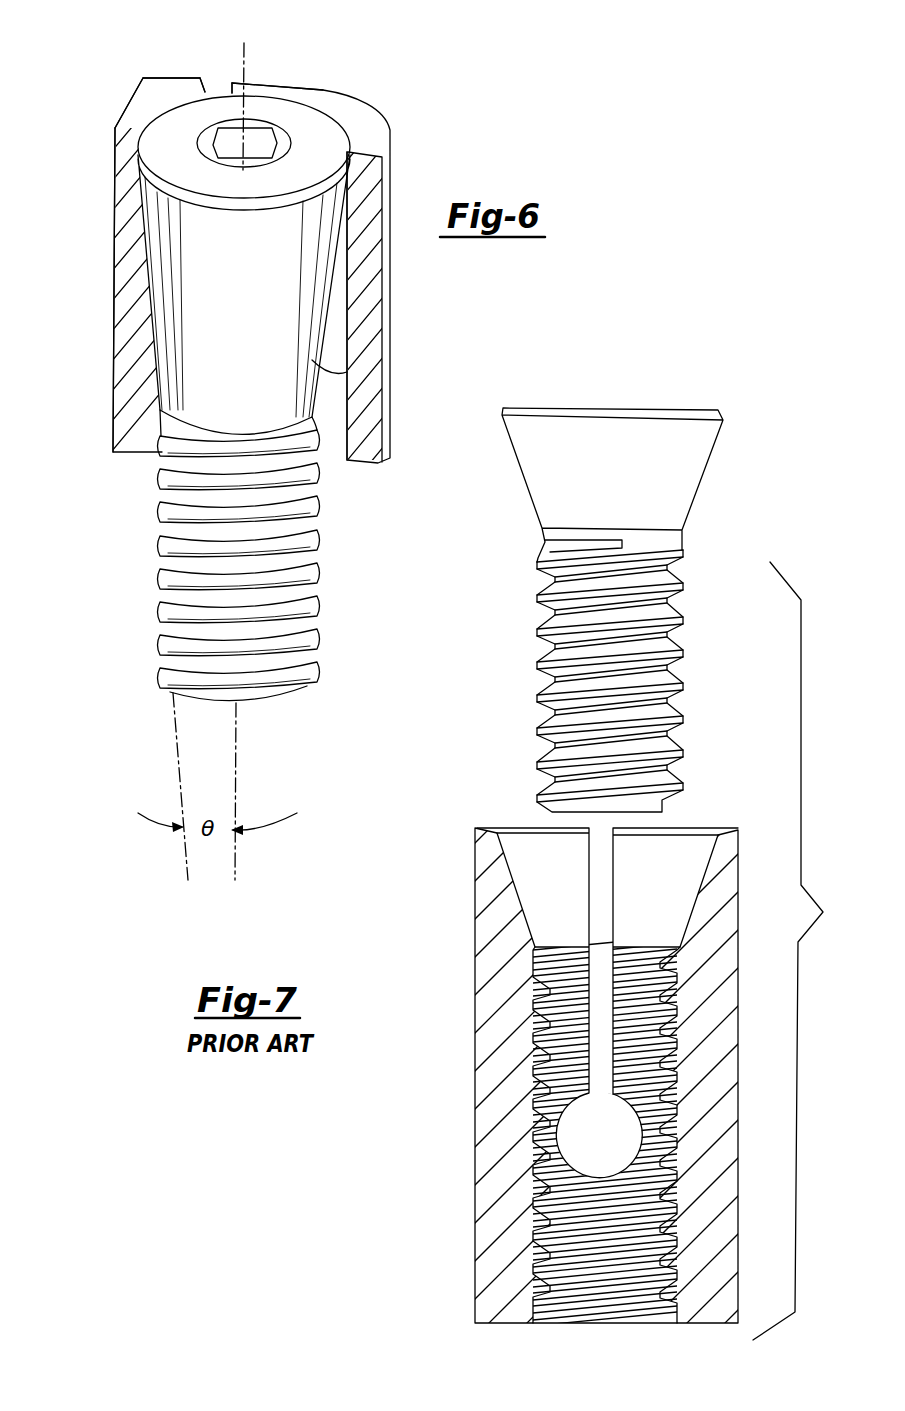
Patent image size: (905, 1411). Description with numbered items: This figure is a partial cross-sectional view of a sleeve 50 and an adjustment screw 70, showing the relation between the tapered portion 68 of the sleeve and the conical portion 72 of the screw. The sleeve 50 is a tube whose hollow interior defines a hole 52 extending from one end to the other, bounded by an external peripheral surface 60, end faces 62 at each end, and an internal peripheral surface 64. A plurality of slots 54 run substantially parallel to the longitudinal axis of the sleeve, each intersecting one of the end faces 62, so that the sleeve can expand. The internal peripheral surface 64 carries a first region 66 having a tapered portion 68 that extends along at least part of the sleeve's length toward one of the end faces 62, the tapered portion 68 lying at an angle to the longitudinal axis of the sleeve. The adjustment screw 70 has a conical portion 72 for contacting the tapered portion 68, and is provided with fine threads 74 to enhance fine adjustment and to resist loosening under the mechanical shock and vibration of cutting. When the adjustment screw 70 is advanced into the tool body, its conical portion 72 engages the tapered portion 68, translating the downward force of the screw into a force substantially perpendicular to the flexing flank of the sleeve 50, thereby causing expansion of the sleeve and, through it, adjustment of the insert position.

The sleeve 50 is at (325, 92).
The hole 52 is at (323, 452).
The slots 54 is at (217, 88).
The external peripheral surface 60 is at (385, 163).
The end faces 62 is at (367, 125).
The internal peripheral surface 64 is at (340, 307).
The first region 66 is at (135, 97).
The tapered portion 68 is at (130, 275).
The adjustment screw 70 is at (285, 712).
The conical portion 72 is at (327, 370).
The fine threads 74 is at (287, 592).